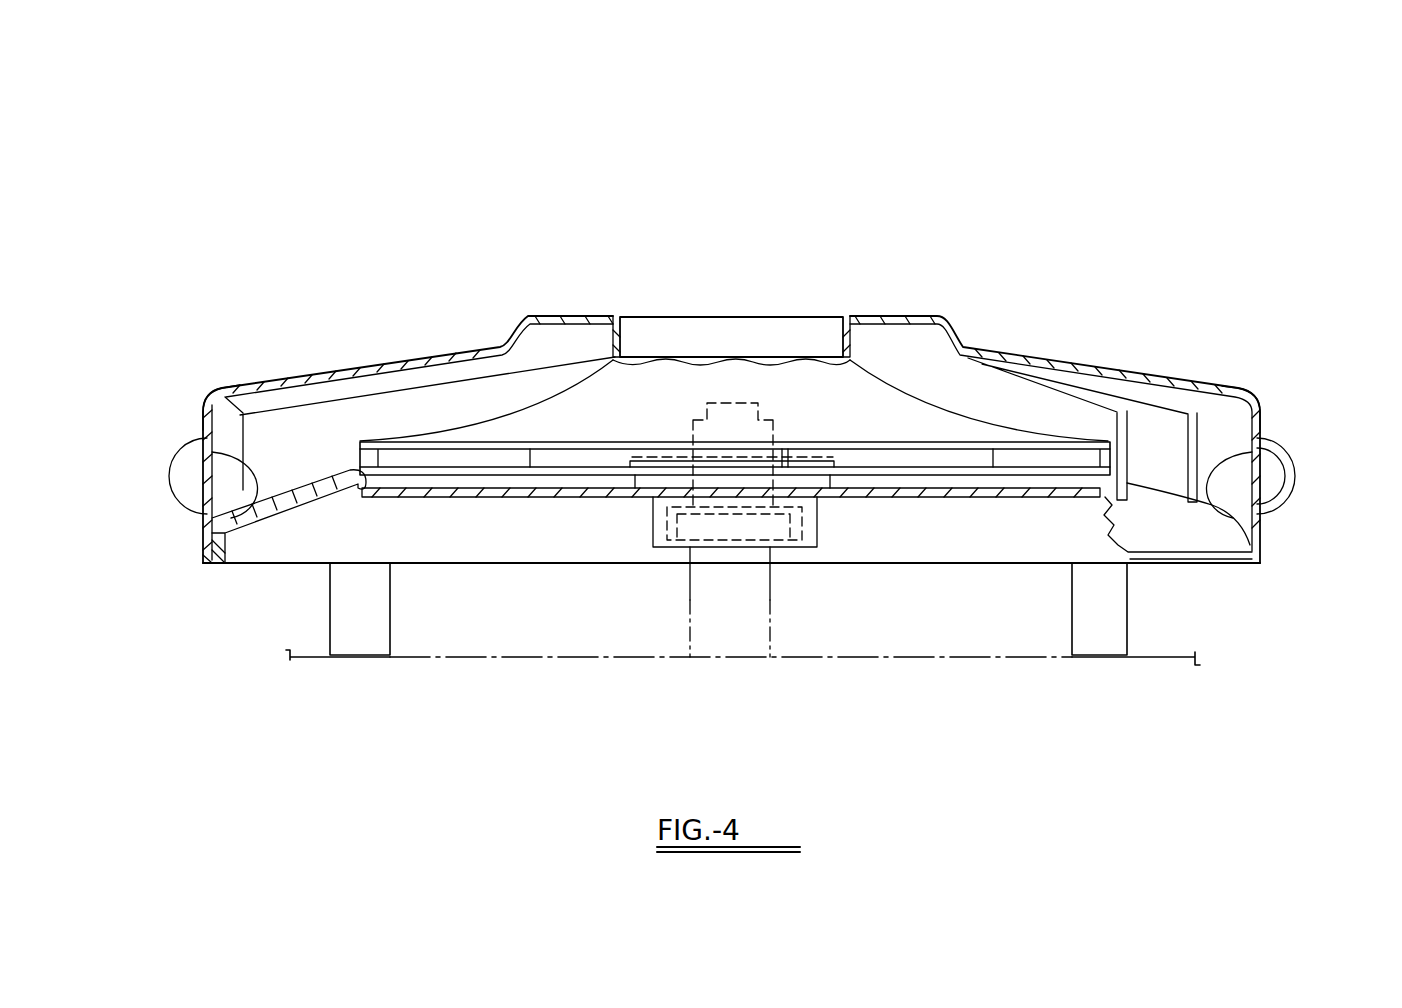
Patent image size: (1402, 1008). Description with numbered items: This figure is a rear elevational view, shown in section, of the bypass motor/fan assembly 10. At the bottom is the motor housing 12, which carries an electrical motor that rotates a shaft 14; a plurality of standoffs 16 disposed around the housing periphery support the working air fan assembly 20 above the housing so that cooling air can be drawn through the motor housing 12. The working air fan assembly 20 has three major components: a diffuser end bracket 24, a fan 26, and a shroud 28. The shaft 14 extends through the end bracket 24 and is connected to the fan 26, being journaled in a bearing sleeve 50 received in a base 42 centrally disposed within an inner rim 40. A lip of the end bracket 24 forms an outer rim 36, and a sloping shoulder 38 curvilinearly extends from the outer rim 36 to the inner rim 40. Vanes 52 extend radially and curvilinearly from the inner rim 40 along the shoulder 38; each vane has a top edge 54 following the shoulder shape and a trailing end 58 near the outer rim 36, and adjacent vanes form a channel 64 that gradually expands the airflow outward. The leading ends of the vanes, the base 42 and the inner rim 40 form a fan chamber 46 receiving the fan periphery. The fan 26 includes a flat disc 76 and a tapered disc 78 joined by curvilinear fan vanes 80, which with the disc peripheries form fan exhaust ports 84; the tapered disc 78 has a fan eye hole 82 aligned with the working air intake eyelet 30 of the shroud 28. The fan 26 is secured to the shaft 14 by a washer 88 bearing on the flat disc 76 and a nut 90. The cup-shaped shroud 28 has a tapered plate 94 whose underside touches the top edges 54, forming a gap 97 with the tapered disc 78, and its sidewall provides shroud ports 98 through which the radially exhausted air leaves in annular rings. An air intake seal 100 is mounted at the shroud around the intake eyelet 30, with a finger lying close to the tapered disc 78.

The bypass motor/fan assembly 10 is at (978, 165).
The motor housing 12 is at (945, 652).
The shaft 14 is at (710, 405).
The standoffs 16 is at (330, 607).
The working air fan assembly 20 is at (392, 315).
The diffuser end bracket 24 is at (212, 568).
The fan 26 is at (958, 398).
The shroud 28 is at (1090, 352).
The working air intake eyelet 30 is at (716, 328).
The outer rim 36 is at (1262, 558).
The sloping shoulder 38 is at (262, 478).
The inner rim 40 is at (366, 490).
The base 42 is at (418, 497).
The fan chamber 46 is at (467, 482).
The bearing sleeve 50 is at (650, 481).
The vanes 52 is at (290, 397).
The top edge 54 is at (380, 368).
The trailing end 58 is at (215, 405).
The channel 64 is at (1160, 497).
The flat disc 76 is at (1037, 470).
The tapered disc 78 is at (443, 428).
The fan vanes 80 is at (990, 462).
The fan eye hole 82 is at (760, 352).
The fan exhaust ports 84 is at (923, 460).
The washer 88 is at (815, 455).
The nut 90 is at (775, 423).
The tapered plate 94 is at (455, 342).
The gap 97 is at (418, 393).
The shroud ports 98 is at (172, 467).
The air intake seal 100 is at (862, 305).